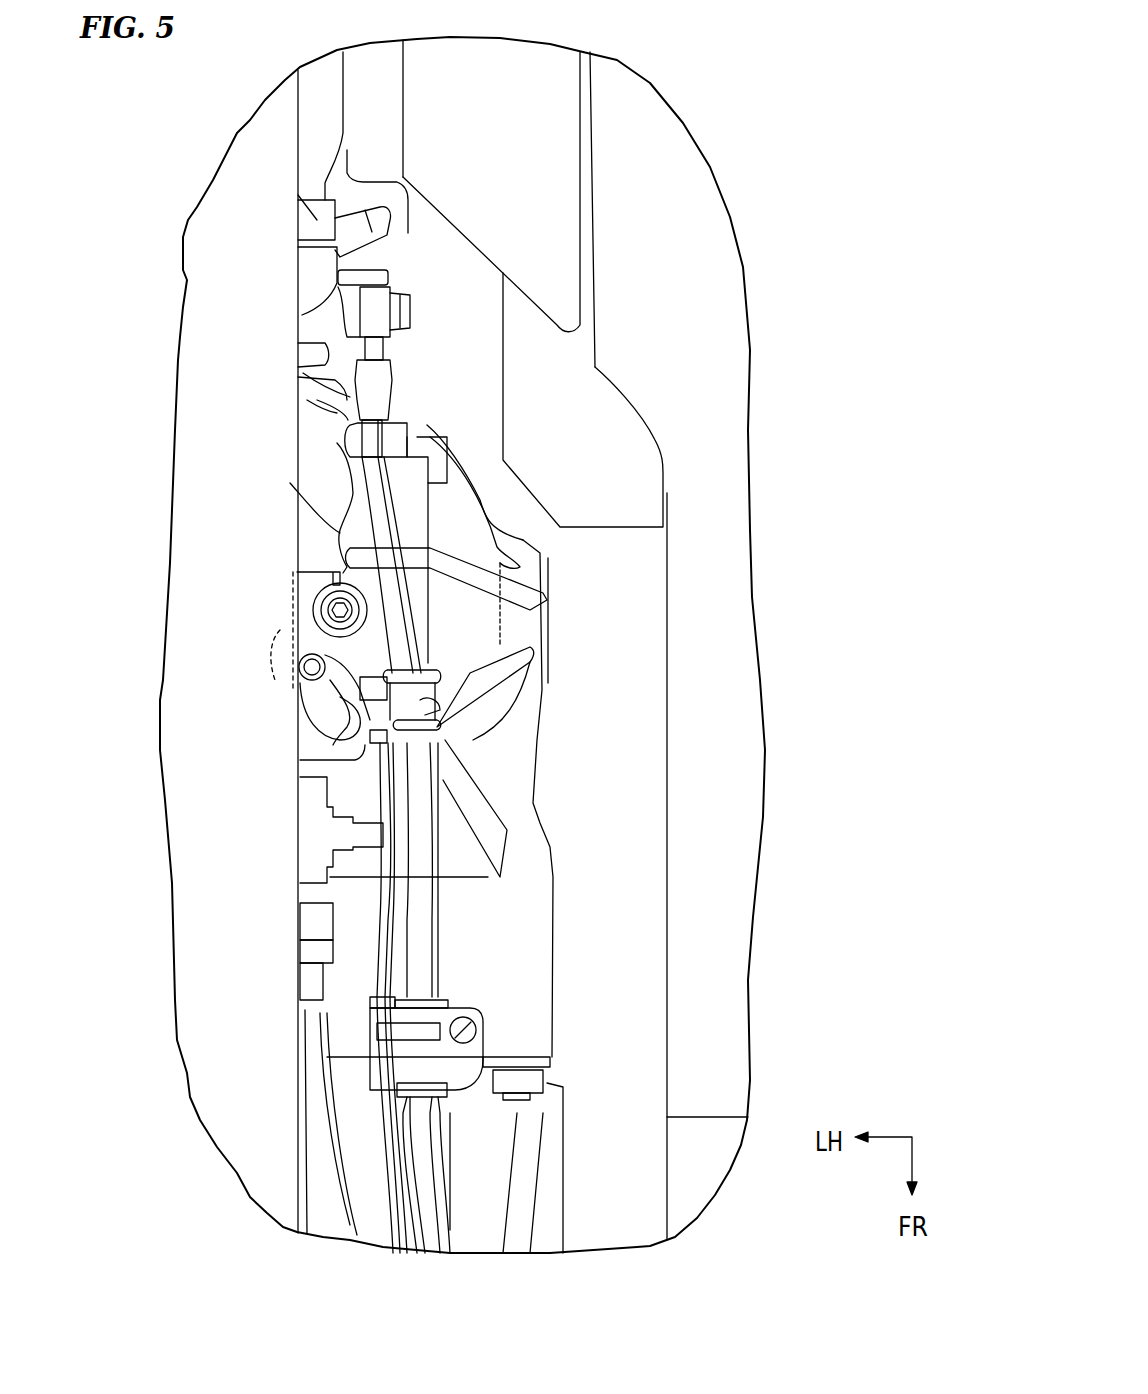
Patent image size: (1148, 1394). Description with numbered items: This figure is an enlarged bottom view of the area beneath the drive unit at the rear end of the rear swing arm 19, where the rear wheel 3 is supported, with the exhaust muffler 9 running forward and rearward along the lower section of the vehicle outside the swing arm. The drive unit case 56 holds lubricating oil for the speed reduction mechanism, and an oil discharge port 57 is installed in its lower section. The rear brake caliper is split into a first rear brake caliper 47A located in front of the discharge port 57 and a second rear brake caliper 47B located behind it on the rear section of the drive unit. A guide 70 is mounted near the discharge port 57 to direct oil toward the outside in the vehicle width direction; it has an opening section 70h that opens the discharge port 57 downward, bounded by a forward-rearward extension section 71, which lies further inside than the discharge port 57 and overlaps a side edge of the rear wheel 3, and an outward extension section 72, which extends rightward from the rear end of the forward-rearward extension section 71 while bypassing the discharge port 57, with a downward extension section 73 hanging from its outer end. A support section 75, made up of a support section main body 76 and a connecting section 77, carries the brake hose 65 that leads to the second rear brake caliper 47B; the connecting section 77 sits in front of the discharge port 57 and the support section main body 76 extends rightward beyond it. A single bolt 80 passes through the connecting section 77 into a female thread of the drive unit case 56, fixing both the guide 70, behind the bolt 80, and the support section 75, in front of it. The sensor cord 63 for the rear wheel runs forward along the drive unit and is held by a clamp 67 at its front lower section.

The rear wheel 3 is at (210, 368).
The exhaust muffler 9 is at (560, 137).
The rear swing arm 19 is at (525, 1197).
The first rear brake caliper 47A is at (320, 923).
The second rear brake caliper 47B is at (323, 317).
The drive unit case 56 is at (480, 627).
The discharge port 57 is at (343, 610).
The sensor cord for a rear wheel 63 is at (397, 1153).
The brake hose 65 is at (423, 893).
The clamp 67 is at (423, 1042).
The guide 70 is at (312, 567).
The opening section 70h is at (300, 668).
The forward-rearward extension section 71 is at (315, 608).
The outward extension section 72 is at (333, 572).
The downward extension section 73 is at (345, 572).
The support section 75 is at (310, 745).
The support section main body 76 is at (413, 710).
The connecting section 77 is at (312, 690).
The bolt 80 is at (305, 680).